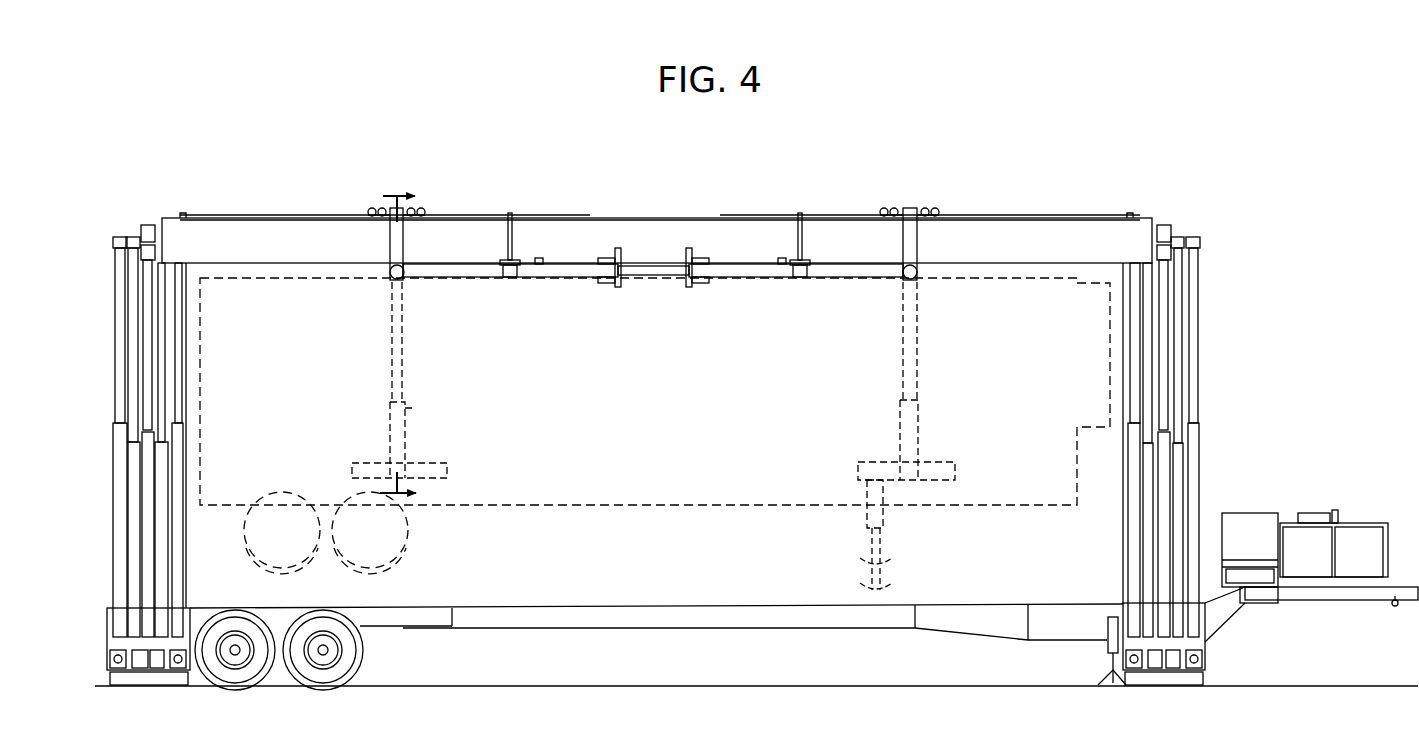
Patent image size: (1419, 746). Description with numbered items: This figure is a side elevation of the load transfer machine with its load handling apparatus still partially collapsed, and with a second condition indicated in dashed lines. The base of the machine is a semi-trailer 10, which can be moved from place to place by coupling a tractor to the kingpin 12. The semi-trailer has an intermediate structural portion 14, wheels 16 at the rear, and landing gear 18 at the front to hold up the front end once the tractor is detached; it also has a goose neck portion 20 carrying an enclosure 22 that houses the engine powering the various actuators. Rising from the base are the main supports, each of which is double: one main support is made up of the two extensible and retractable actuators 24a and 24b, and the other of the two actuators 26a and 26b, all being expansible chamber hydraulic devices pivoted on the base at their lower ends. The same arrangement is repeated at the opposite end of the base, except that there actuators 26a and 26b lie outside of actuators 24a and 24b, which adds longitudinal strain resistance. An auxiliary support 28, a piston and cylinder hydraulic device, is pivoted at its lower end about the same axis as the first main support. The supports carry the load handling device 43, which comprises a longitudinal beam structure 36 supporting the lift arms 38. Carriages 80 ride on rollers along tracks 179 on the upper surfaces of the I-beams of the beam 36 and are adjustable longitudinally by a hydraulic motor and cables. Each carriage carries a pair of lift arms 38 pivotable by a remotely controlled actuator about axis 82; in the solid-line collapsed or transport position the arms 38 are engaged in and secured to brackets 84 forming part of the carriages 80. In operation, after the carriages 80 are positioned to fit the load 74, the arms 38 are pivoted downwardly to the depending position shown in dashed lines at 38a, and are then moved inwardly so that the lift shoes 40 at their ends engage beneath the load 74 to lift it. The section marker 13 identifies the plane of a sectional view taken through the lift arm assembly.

The semi-trailer 10 is at (660, 652).
The kingpin 12 is at (1393, 612).
The section line 13 is at (410, 338).
The intermediate structural portion 14 is at (592, 607).
The wheels 16 is at (315, 678).
The landing gear 18 is at (1107, 658).
The goose neck portion 20 is at (1318, 599).
The enclosure 22 is at (1349, 537).
The actuator of main support 24a is at (122, 432).
The actuator of main support 24b is at (178, 455).
The actuator of main support 26a is at (135, 452).
The actuator of main support 26b is at (163, 490).
The auxiliary support 28 is at (150, 536).
The longitudinal beam structure 36 is at (265, 232).
The lift arm 38 is at (468, 280).
The depending position of lift arm 38a is at (405, 346).
The lift shoe 40 is at (351, 474).
The load handling device 43 is at (620, 214).
The load 74 is at (1085, 452).
The carriage 80 is at (377, 207).
The pivot axis of lift arm 82 is at (387, 280).
The bracket 84 is at (512, 282).
The track 179 is at (473, 218).